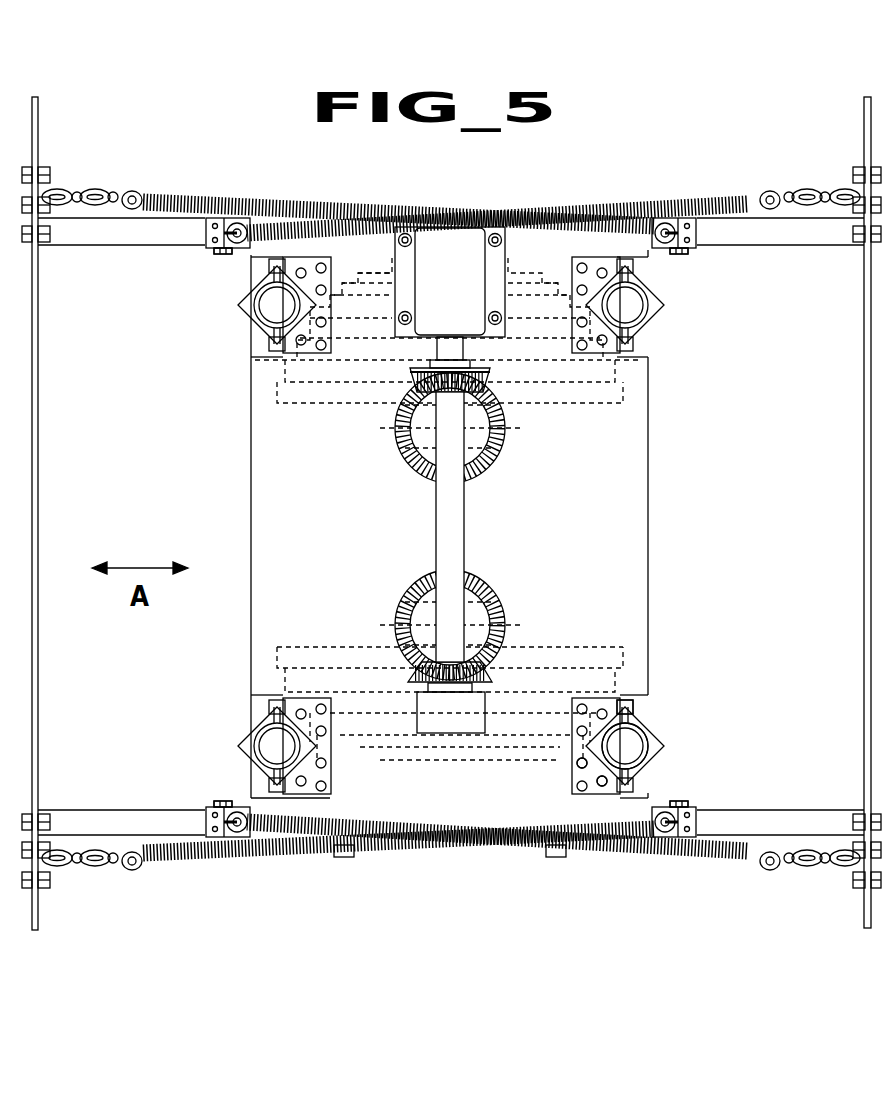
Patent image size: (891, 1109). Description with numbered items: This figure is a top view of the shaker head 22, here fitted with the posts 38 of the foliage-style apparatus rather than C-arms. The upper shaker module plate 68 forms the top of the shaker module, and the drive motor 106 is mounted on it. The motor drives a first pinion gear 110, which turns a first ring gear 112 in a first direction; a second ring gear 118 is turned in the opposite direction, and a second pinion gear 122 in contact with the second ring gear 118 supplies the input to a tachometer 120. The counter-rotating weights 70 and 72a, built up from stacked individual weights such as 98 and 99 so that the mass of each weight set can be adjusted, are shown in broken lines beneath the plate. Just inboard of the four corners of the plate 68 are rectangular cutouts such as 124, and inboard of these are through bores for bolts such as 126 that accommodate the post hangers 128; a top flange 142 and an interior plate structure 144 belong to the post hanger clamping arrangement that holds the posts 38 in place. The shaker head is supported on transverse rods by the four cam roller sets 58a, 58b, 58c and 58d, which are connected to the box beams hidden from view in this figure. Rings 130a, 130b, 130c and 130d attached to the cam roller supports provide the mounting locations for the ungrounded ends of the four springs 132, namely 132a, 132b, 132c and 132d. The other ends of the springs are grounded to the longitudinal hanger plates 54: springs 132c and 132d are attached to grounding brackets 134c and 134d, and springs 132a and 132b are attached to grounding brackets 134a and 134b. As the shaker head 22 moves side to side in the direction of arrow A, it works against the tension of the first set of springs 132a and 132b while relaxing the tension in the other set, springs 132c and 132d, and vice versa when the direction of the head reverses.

The support rail 54 is at (40, 125).
The shaker head 22 is at (185, 499).
The upper shaker module plate 68 is at (650, 530).
The spring 132c is at (333, 207).
The spring 132a is at (594, 208).
The spring 132d is at (325, 862).
The spring 132b is at (732, 860).
The grounding bracket 134c is at (50, 186).
The grounding bracket 134a is at (853, 187).
The grounding bracket 134d is at (50, 868).
The grounding bracket 134b is at (853, 867).
The ring 130a is at (222, 230).
The ring 130c is at (678, 228).
The ring 130b is at (222, 830).
The ring 130d is at (677, 828).
The cam roller set 58a is at (212, 255).
The cam roller set 58c is at (692, 253).
The cam roller set 58b is at (210, 806).
The cam roller set 58d is at (695, 806).
The post hanger 128 is at (612, 698).
The post 38 is at (648, 315).
The top flange 142 is at (655, 742).
The rectangular cutout 124 is at (642, 697).
The bolt 126 is at (603, 786).
The interior plate structure 144 is at (592, 765).
The drive motor 106 is at (475, 279).
The first pinion gear 110 is at (488, 380).
The springs 132 is at (436, 520).
The first ring gear 112 is at (398, 428).
The second ring gear 118 is at (398, 628).
The second pinion gear 122 is at (490, 676).
The tachometer 120 is at (483, 708).
The individual weight 99 is at (563, 290).
The counter rotating weight 72a is at (298, 403).
The counter rotating weight 70 is at (297, 647).
The individual weight 98 is at (557, 708).